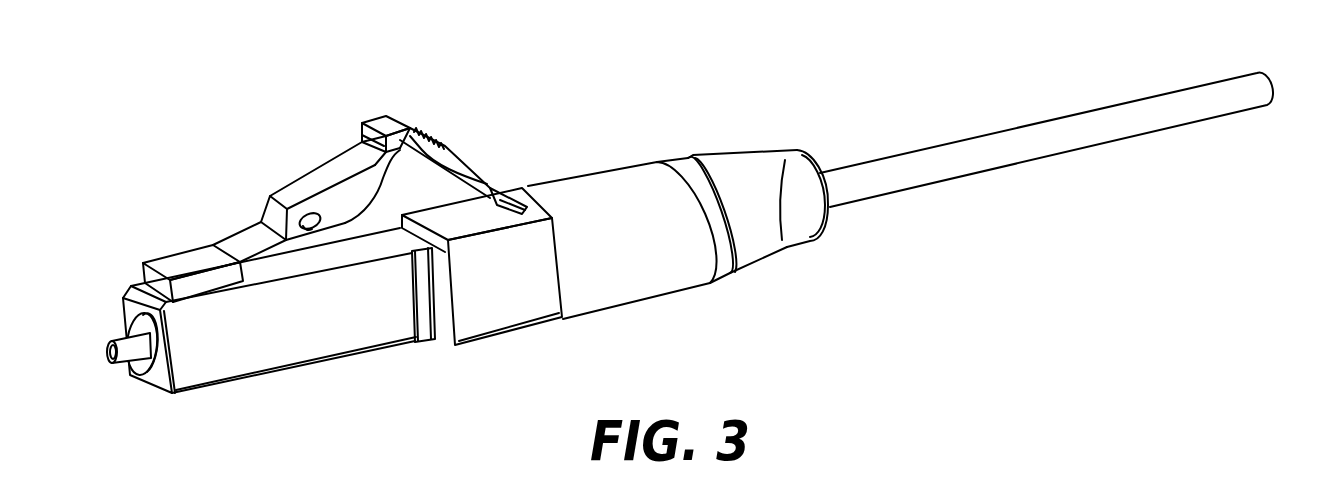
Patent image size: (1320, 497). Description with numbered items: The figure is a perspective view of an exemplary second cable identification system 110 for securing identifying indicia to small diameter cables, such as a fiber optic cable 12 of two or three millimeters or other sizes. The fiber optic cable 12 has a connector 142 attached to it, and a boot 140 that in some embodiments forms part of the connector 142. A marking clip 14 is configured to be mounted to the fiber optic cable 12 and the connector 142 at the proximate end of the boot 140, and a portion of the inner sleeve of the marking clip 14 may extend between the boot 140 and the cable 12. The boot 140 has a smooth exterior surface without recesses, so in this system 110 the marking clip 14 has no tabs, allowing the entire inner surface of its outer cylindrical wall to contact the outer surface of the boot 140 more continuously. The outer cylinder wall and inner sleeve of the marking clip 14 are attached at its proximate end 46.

The cable identification system 110 is at (717, 74).
The connector 142 is at (540, 198).
The boot 140 is at (647, 187).
The marking clip 14 is at (758, 185).
The proximate end 46 is at (813, 158).
The fiber optic cable 12 is at (975, 150).